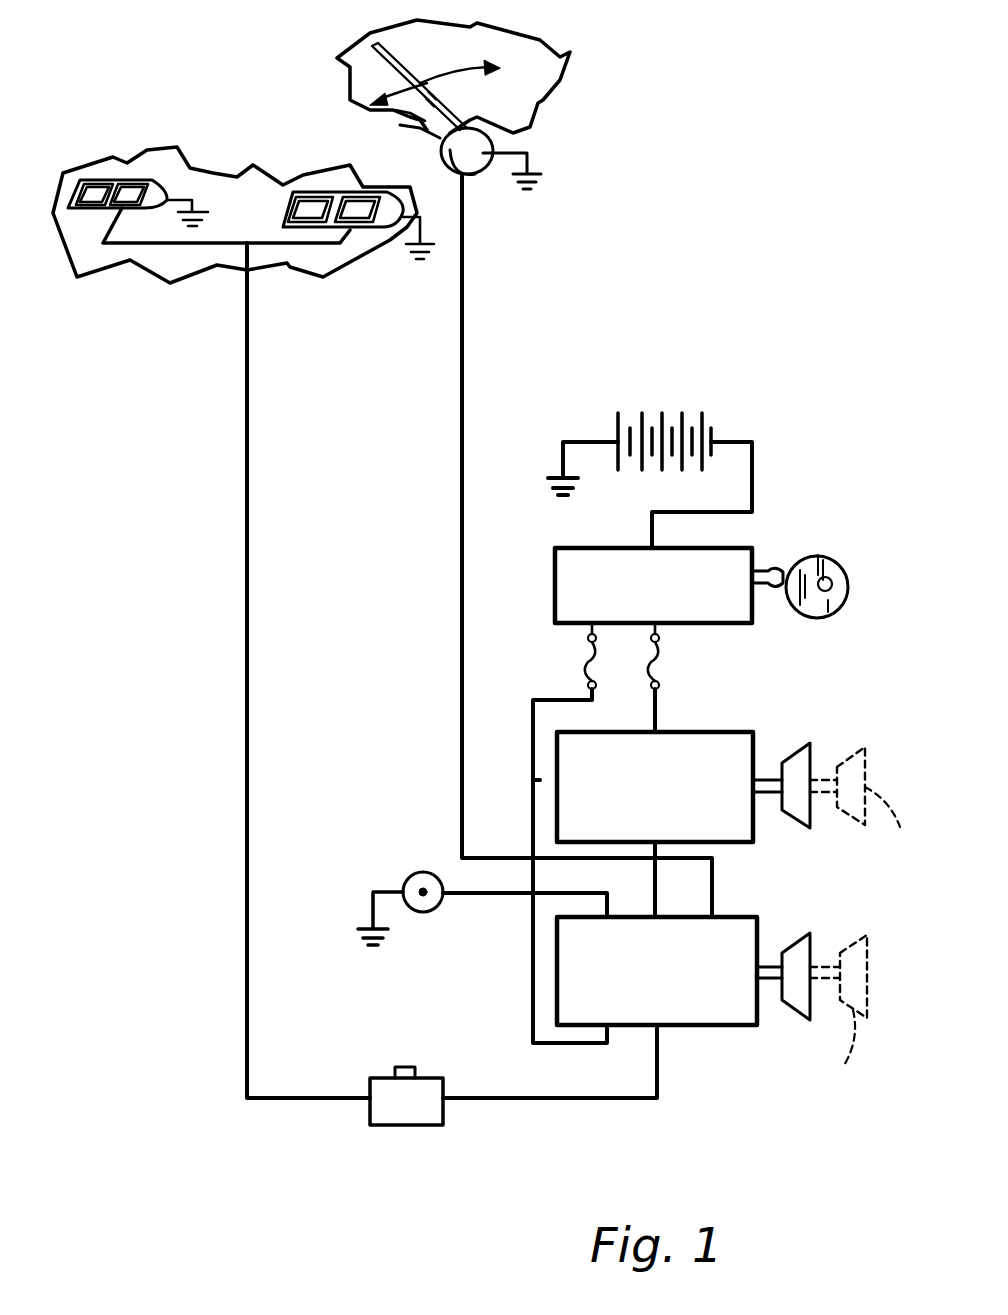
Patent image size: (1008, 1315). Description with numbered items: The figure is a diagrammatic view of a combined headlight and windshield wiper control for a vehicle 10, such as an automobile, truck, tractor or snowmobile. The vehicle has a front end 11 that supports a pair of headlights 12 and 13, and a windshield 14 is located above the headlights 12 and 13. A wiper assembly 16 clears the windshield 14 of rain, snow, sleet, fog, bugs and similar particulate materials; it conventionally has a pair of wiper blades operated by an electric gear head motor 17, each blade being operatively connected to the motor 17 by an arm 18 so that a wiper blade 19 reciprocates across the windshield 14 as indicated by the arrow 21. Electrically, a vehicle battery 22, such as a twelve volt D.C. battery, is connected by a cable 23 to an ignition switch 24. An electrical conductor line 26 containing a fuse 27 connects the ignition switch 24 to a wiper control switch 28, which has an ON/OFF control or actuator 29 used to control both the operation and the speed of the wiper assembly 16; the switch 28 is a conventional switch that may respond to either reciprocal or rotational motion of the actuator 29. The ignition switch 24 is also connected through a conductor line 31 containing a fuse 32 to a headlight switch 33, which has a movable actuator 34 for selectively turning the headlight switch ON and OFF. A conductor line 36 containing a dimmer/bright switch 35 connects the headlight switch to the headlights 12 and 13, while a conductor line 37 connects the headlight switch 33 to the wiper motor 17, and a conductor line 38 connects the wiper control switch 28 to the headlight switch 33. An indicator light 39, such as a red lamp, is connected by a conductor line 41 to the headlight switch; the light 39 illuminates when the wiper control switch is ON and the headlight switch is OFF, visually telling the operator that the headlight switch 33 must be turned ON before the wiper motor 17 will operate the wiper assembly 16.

The vehicle 10 is at (612, 209).
The front end 11 is at (243, 171).
The headlight 12 is at (93, 193).
The headlight 13 is at (358, 198).
The windshield 14 is at (413, 115).
The wiper assembly 16 is at (507, 121).
The electric gear head motor 17 is at (460, 160).
The arm 18 is at (390, 113).
The wiper blade 19 is at (403, 60).
The arrow 21 is at (387, 87).
The vehicle battery 22 is at (672, 418).
The cable 23 is at (752, 470).
The ignition switch 24 is at (553, 557).
The electrical conductor line 26 is at (657, 713).
The fuse 27 is at (653, 670).
The wiper control switch 28 is at (738, 827).
The ON/OFF control or actuator 29 is at (797, 763).
The conductor line 31 is at (533, 780).
The fuse 32 is at (583, 663).
The headlight switch 33 is at (693, 1007).
The movable actuator 34 is at (799, 1003).
The dimmer/bright switch 35 is at (402, 1110).
The conductor line 36 is at (278, 1100).
The conductor line 37 is at (462, 308).
The conductor line 38 is at (655, 892).
The indicator light 39 is at (410, 873).
The conductor line 41 is at (460, 895).